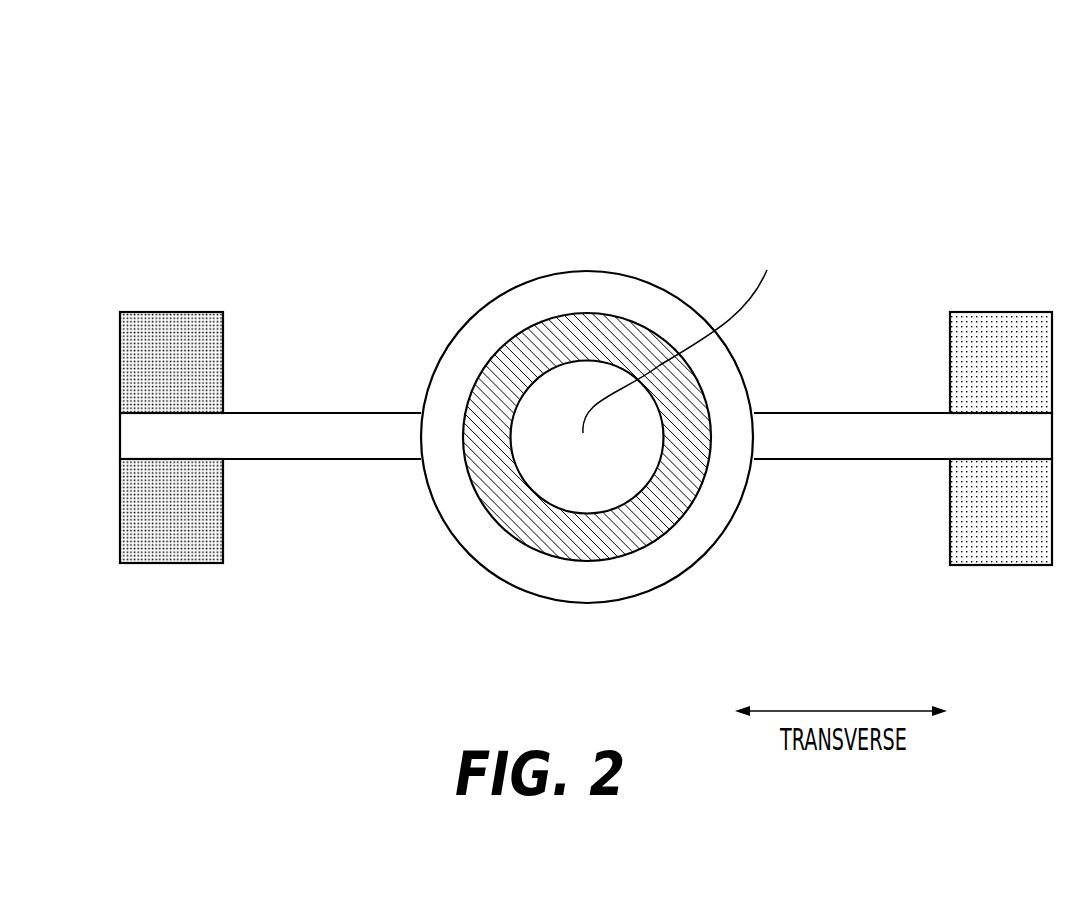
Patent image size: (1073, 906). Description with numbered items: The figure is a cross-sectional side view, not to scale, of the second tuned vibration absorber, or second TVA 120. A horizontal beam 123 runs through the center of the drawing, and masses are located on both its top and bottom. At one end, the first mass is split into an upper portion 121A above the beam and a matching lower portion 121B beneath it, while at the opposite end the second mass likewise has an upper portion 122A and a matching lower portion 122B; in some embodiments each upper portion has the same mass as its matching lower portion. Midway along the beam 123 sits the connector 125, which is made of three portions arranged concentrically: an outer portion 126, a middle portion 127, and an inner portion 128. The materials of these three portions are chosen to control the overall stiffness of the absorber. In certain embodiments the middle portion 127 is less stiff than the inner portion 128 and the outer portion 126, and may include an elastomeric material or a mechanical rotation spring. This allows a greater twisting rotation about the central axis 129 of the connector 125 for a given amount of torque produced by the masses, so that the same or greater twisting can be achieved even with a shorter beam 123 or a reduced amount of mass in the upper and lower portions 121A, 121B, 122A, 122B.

The second TVA 120 is at (210, 135).
The upper portion of first mass 121A is at (1002, 328).
The lower portion of first mass 121B is at (993, 522).
The upper portion of second mass 122A is at (177, 333).
The lower portion of second mass 122B is at (160, 545).
The beam 123 is at (332, 410).
The connector 125 is at (602, 411).
The outer portion 126 is at (563, 292).
The middle portion 127 is at (515, 508).
The inner portion 128 is at (588, 475).
The central axis 129 is at (614, 253).